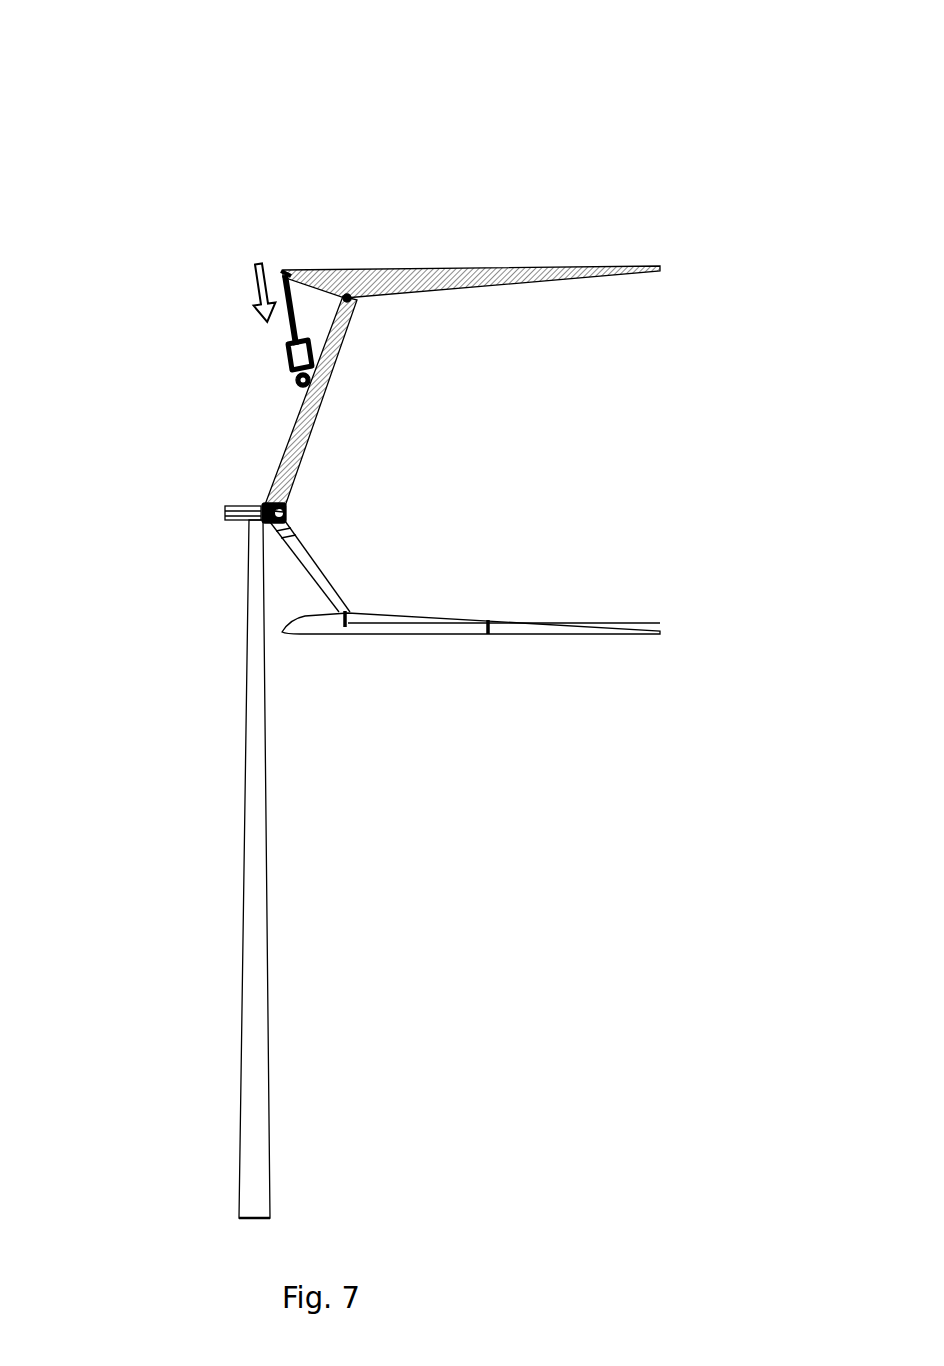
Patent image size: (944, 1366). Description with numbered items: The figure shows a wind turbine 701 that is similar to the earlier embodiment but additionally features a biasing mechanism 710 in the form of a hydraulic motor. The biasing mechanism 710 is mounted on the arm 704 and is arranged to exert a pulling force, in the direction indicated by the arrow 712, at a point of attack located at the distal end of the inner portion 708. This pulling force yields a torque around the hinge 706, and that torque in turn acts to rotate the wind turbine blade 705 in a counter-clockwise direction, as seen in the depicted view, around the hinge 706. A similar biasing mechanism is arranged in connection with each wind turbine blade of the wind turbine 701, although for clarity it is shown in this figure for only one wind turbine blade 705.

The wind turbine 701 is at (132, 117).
The arm 704 is at (300, 415).
The wind turbine blade 705 is at (464, 265).
The hinge 706 is at (350, 302).
The inner portion 708 is at (311, 290).
The biasing mechanism 710 is at (290, 359).
The arrow 712 is at (248, 283).